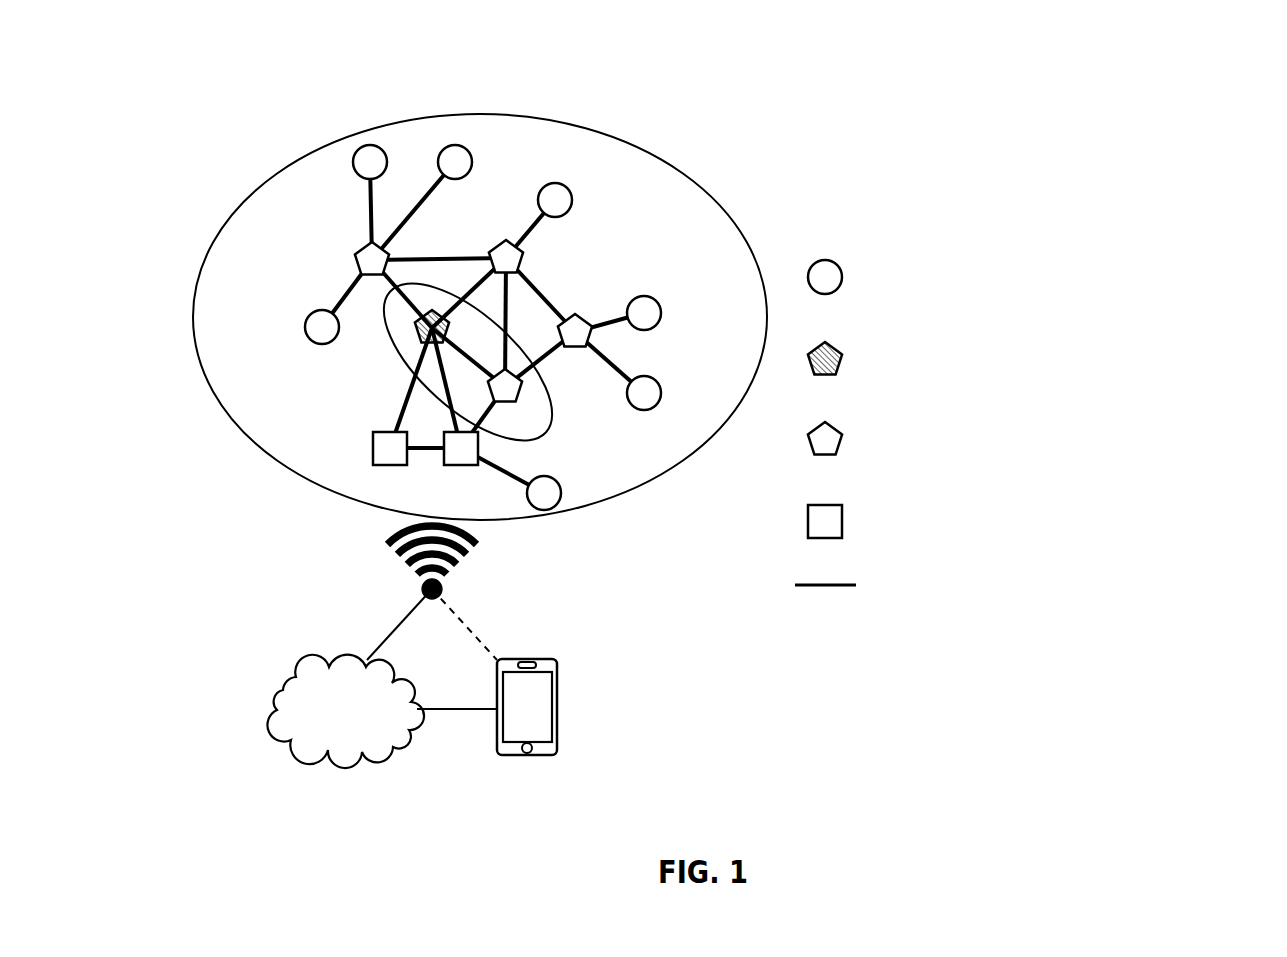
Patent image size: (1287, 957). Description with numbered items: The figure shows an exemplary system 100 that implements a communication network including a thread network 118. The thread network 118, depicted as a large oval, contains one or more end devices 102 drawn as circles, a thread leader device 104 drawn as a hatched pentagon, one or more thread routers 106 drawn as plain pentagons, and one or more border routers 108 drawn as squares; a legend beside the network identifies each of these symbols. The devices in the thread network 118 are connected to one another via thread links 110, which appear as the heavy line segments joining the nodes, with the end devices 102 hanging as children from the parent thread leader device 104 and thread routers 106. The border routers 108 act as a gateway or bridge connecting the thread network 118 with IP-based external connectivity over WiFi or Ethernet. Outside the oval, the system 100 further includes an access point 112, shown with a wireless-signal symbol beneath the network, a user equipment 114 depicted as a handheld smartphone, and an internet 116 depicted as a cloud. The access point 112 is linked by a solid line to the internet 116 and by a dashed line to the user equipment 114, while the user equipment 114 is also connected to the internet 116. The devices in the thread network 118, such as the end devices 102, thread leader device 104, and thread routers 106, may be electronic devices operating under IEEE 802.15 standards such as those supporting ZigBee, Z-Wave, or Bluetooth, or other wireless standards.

The system 100 is at (1210, 76).
The end device 102 is at (1058, 281).
The thread leader device 104 is at (1095, 360).
The thread router 106 is at (1093, 441).
The border router 108 is at (1012, 521).
The thread link 110 is at (982, 585).
The access point 112 is at (465, 560).
The user equipment 114 is at (557, 700).
The internet 116 is at (282, 680).
The thread network 118 is at (675, 168).